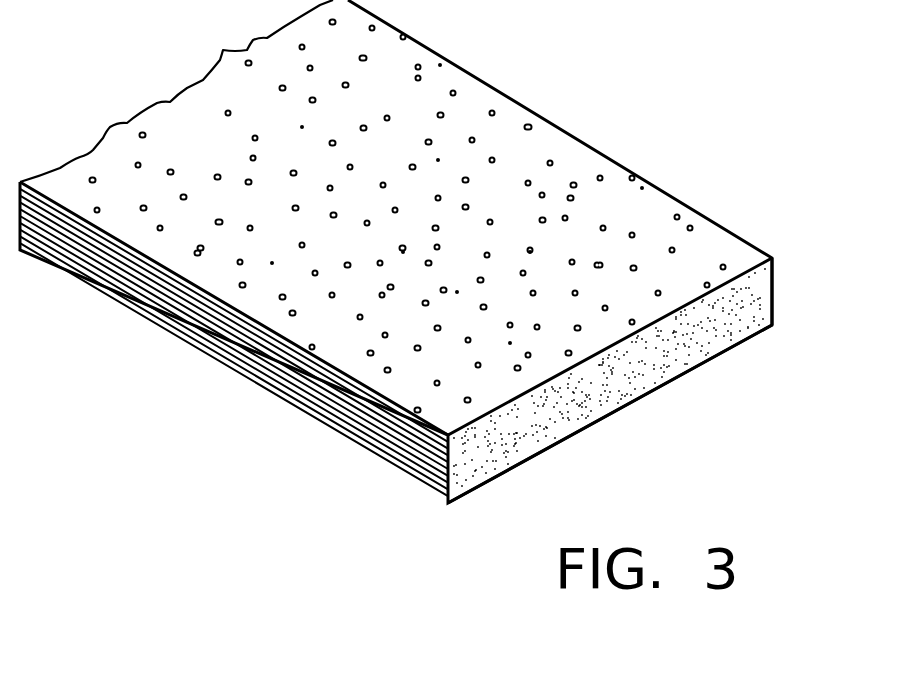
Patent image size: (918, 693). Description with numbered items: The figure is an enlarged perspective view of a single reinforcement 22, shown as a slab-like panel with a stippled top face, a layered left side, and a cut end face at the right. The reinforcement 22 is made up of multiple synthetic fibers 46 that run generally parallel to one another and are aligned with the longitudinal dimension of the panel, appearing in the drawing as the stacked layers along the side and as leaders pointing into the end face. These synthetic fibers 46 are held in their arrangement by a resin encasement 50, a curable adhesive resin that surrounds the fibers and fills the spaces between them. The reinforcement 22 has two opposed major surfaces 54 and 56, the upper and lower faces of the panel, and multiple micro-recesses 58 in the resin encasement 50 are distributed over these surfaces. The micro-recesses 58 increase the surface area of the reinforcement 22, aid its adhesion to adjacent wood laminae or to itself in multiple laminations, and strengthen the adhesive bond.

The reinforcement 22 is at (535, 92).
The synthetic fibers 46 is at (257, 367).
The resin encasement 50 is at (772, 282).
The major surface 54 is at (600, 197).
The major surface 56 is at (740, 339).
The micro-recesses 58 is at (200, 95).